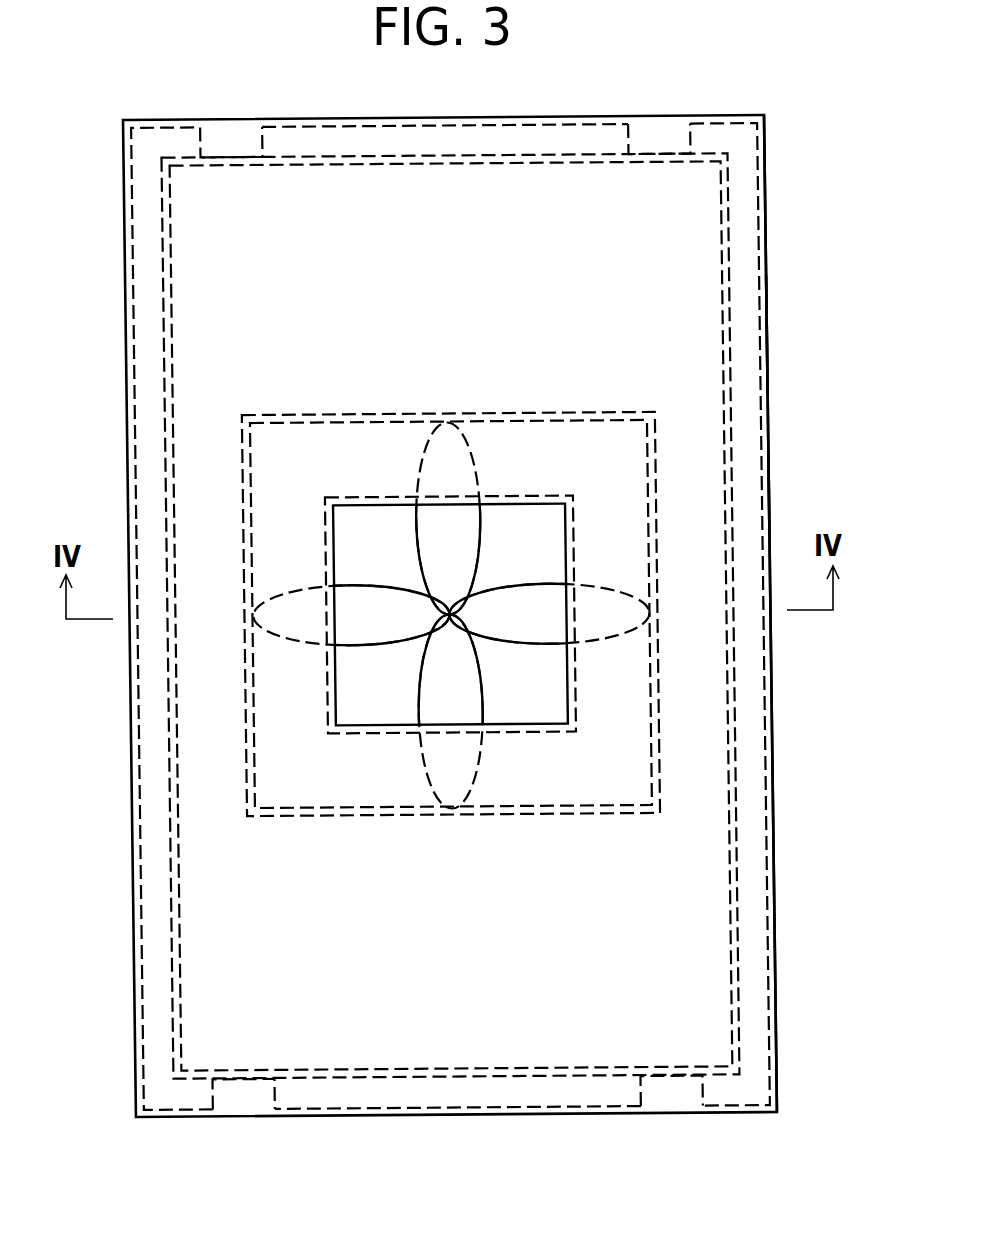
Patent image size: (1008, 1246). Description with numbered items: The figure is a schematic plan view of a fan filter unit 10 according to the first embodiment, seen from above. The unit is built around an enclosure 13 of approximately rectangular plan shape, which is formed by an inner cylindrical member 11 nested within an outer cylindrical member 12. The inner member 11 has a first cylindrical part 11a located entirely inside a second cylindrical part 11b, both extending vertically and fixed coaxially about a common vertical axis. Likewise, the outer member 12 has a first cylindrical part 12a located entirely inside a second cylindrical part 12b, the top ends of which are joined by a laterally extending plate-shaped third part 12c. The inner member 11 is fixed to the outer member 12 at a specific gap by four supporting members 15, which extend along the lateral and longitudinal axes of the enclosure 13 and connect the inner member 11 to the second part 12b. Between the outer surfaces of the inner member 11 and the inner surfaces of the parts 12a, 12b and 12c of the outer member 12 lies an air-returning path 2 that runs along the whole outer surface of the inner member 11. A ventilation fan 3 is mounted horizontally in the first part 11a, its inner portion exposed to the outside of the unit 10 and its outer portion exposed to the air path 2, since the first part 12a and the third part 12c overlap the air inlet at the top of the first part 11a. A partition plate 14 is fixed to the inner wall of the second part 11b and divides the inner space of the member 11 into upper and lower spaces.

The air-returning path 2 is at (748, 683).
The ventilation fan 3 is at (467, 532).
The fan filter unit 10 is at (767, 80).
The inner cylindrical member 11 is at (733, 355).
The first cylindrical part 11a is at (500, 815).
The second cylindrical part 11b is at (733, 783).
The outer cylindrical member 12 is at (783, 418).
The first cylindrical part 12a is at (542, 733).
The second cylindrical part 12b is at (768, 493).
The third part 12c is at (560, 973).
The enclosure 13 is at (875, 275).
The partition plate 14 is at (353, 563).
The supporting members 15 is at (233, 140).